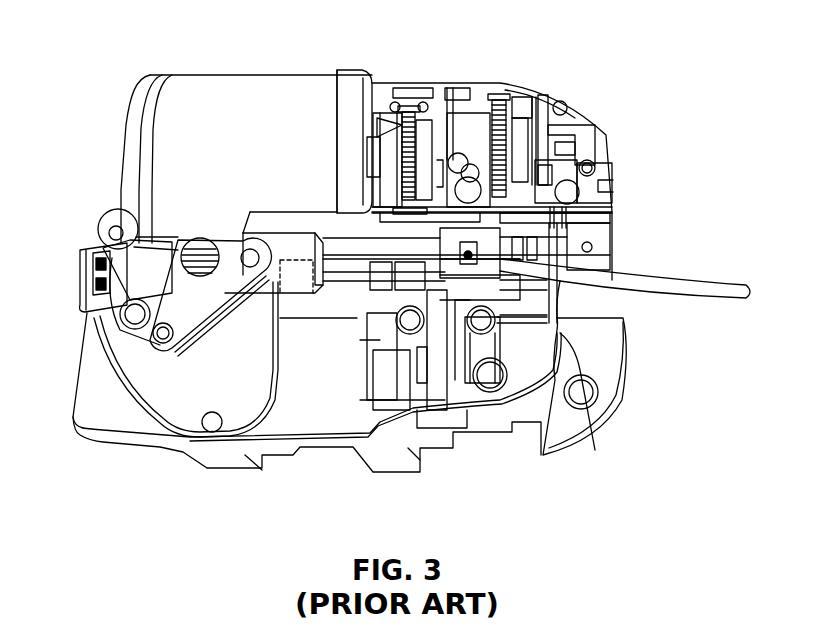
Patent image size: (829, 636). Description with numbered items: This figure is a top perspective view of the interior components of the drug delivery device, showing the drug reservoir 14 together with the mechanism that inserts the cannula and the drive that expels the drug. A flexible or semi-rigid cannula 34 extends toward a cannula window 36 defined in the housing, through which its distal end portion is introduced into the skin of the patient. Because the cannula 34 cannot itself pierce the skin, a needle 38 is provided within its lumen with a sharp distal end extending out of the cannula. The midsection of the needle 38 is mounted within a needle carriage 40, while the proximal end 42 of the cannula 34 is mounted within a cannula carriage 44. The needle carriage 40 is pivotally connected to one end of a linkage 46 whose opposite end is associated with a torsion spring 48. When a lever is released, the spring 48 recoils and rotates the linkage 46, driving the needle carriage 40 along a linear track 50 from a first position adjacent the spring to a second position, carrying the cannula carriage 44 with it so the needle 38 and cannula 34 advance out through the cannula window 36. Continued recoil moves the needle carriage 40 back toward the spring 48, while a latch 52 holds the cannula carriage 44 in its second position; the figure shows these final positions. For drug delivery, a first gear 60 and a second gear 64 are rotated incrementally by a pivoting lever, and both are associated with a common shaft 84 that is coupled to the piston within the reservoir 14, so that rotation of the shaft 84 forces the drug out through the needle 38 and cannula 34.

The reservoir 14 is at (211, 106).
The cannula 34 is at (710, 283).
The cannula window 36 is at (603, 317).
The needle 38 is at (263, 407).
The needle carriage 40 is at (286, 242).
The proximal end 42 is at (470, 264).
The cannula carriage 44 is at (483, 240).
The linkage 46 is at (172, 292).
The torsion spring 48 is at (192, 242).
The linear track 50 is at (410, 290).
The latch 52 is at (440, 378).
The first gear 60 is at (410, 110).
The second gear 64 is at (500, 105).
The shaft 84 is at (468, 145).